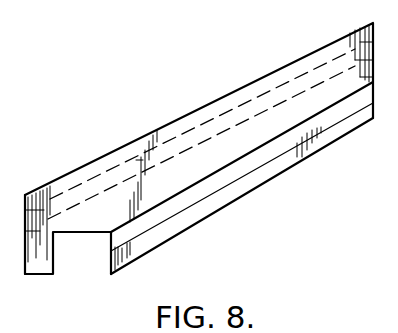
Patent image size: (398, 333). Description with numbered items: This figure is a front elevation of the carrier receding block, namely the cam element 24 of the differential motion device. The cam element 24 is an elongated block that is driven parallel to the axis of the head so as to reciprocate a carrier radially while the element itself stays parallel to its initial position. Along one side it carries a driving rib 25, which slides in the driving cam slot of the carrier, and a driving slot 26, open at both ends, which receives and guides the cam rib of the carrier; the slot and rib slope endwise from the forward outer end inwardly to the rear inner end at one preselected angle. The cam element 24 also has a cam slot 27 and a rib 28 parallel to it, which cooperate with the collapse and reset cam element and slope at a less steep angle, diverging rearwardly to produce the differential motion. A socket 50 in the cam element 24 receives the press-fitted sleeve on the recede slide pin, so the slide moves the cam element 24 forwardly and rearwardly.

The cam element 24 is at (113, 151).
The driving rib 25 is at (188, 216).
The driving slot 26 is at (249, 166).
The cam slot 27 is at (303, 74).
The rib 28 is at (212, 113).
The socket 50 is at (54, 262).